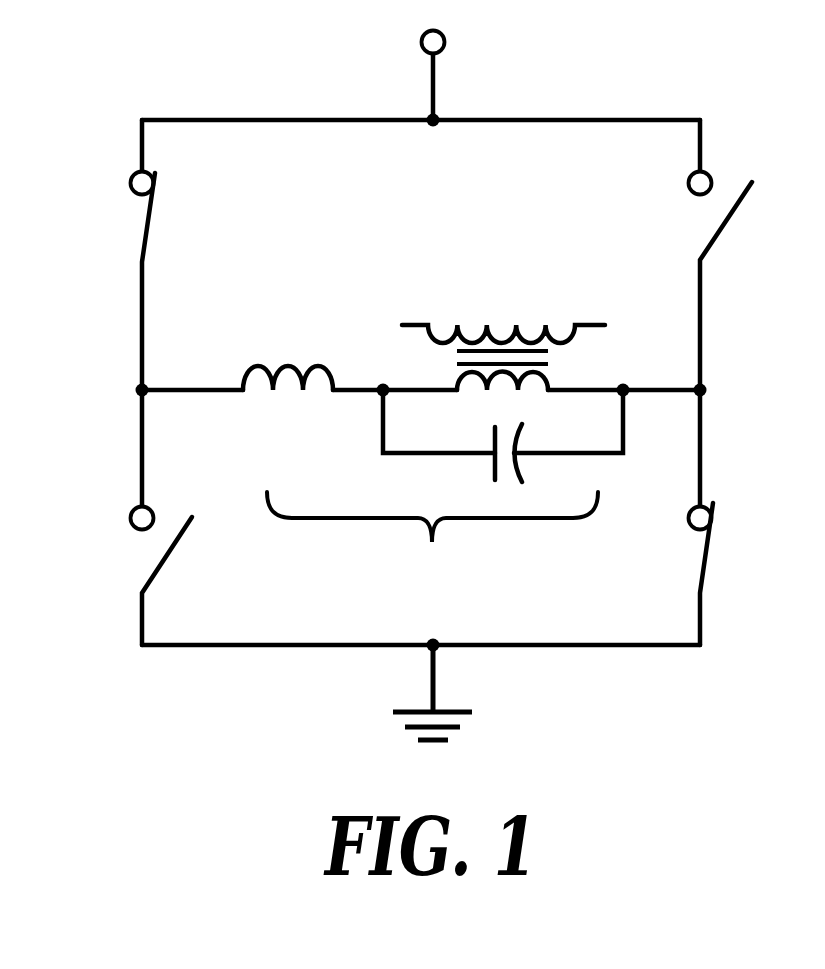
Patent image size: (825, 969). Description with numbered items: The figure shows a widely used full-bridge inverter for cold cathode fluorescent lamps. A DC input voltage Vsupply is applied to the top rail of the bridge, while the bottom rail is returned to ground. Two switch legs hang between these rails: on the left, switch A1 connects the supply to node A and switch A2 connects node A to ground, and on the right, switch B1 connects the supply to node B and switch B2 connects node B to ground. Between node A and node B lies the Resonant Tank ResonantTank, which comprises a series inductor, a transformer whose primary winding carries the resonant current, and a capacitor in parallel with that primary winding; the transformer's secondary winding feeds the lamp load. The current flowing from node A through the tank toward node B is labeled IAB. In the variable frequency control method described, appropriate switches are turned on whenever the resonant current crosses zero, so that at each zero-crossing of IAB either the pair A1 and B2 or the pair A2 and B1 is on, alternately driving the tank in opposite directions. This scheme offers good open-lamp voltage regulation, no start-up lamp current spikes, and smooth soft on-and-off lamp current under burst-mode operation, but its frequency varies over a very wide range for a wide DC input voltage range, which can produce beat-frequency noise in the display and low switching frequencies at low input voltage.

The DC input voltage supply Vsupply is at (551, 60).
The switch A1 is at (115, 255).
The switch A2 is at (133, 517).
The switch B1 is at (738, 255).
The switch B2 is at (737, 517).
The node A is at (95, 370).
The node B is at (762, 369).
The current IAB is at (282, 333).
The resonant tank ResonantTank is at (433, 468).